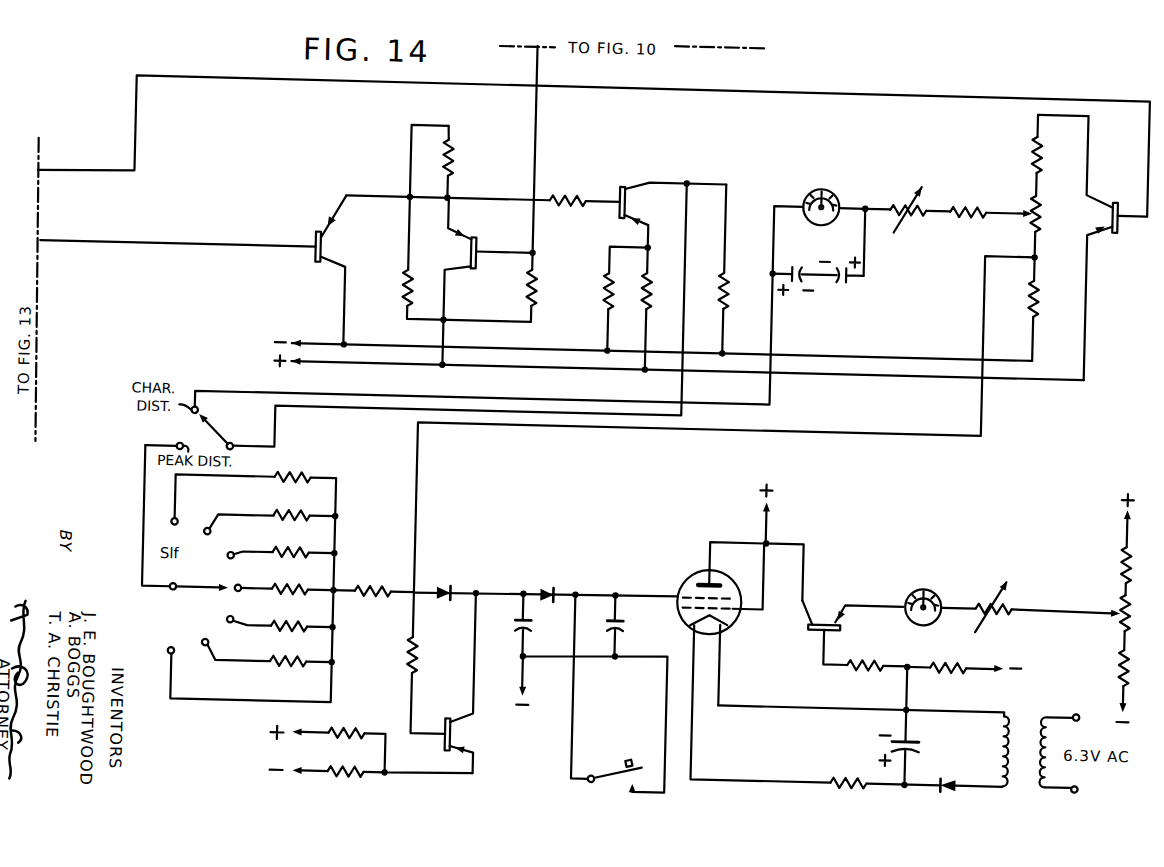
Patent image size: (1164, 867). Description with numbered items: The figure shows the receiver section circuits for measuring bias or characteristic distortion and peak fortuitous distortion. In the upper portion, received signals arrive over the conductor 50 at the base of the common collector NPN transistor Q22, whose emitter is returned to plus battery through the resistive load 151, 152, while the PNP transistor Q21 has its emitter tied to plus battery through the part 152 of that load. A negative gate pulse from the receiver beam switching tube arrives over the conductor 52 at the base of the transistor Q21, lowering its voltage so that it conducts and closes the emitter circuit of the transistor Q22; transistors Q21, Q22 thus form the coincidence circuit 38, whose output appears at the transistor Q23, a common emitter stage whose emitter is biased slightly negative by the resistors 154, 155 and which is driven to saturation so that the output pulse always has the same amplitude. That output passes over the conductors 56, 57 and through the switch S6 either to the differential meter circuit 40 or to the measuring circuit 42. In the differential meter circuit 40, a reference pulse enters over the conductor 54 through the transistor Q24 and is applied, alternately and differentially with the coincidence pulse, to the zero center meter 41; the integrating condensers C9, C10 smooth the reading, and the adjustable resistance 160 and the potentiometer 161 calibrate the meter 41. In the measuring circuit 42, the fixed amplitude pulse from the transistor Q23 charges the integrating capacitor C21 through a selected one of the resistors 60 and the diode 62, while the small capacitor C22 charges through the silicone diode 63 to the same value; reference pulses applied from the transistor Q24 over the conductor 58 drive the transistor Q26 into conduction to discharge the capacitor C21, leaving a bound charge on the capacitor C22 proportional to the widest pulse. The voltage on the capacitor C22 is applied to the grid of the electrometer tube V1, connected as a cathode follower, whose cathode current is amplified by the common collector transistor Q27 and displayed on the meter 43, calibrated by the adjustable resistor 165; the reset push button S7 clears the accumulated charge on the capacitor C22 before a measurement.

The conductor 54 is at (53, 168).
The conductor 52 is at (52, 239).
The conductor 50 is at (539, 53).
The coincidence circuit 38 is at (427, 103).
The resistive load 151 is at (457, 150).
The resistive load 152 is at (409, 276).
The PNP transistor Q21 is at (328, 221).
The common collector NPN transistor Q22 is at (467, 218).
The transistor Q23 is at (632, 172).
The resistor 154 is at (609, 277).
The resistor 155 is at (658, 270).
The conductor 56 is at (340, 398).
The conductor 57 is at (334, 385).
The meter 41 is at (810, 176).
The integrating condenser C9 is at (802, 269).
The integrating condenser C10 is at (850, 244).
The differential meter circuit 40 is at (884, 144).
The adjustable resistance 160 is at (907, 202).
The potentiometer 161 is at (1046, 187).
The transistor Q24 is at (1110, 175).
The conductor 58 is at (988, 282).
The switch S6 is at (231, 426).
The resistors 60 is at (304, 463).
The diode 62 is at (471, 554).
The silicone diode 63 is at (567, 574).
The integrating capacitor C21 is at (547, 615).
The capacitor C22 is at (637, 615).
The measuring circuit 42 is at (703, 510).
The electrometer tube V1 is at (699, 557).
The common collector transistor Q27 is at (841, 595).
The meter 43 is at (944, 563).
The adjustable resistor 165 is at (1007, 601).
The transistor Q26 is at (470, 727).
The reset push button S7 is at (627, 754).